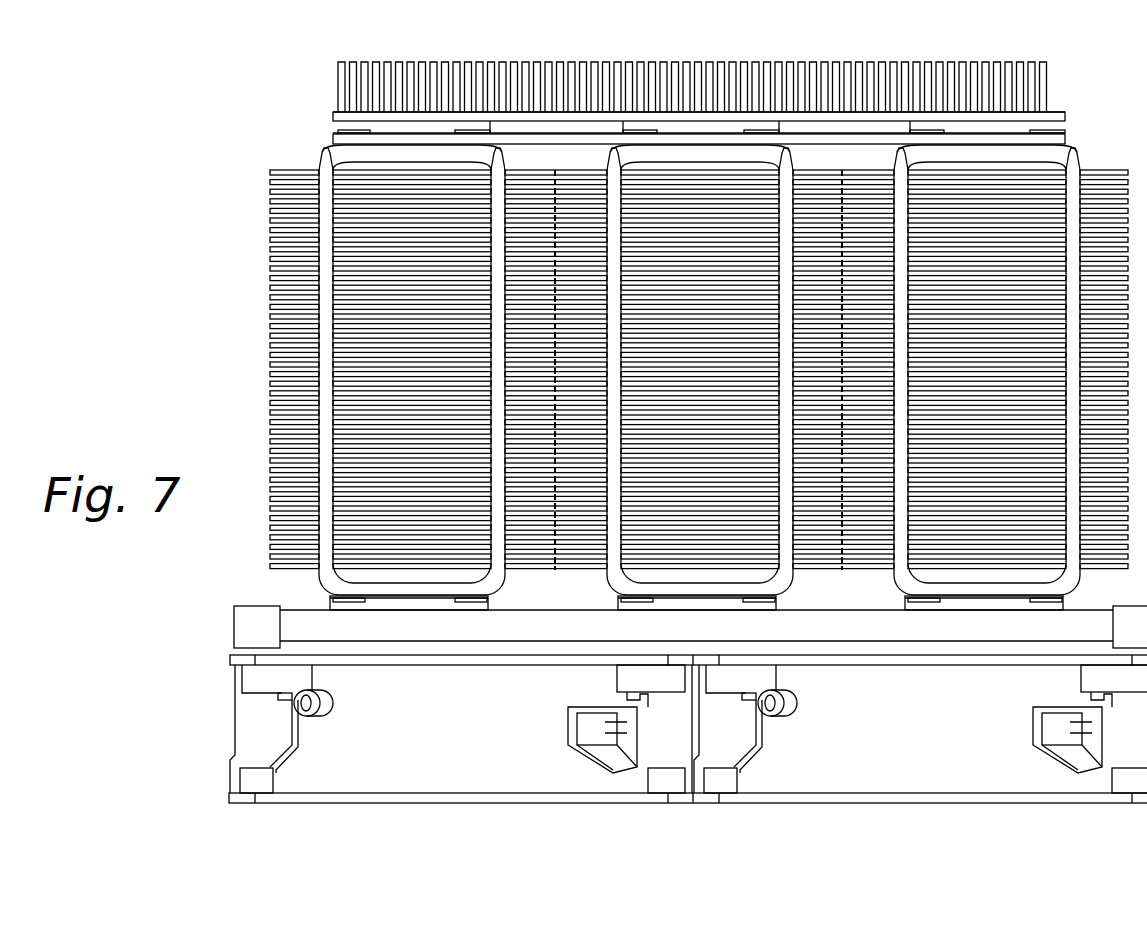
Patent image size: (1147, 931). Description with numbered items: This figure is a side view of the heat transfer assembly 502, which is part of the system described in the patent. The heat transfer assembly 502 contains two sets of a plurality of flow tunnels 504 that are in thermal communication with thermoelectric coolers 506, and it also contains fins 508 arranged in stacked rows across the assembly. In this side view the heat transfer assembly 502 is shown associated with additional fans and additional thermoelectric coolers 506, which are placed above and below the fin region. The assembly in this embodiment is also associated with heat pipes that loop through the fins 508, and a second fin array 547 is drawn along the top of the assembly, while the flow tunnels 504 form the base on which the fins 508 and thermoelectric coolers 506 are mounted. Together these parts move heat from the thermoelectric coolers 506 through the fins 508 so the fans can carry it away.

The heat transfer assembly 502 is at (170, 122).
The flow tunnels 504 is at (318, 622).
The thermoelectric coolers 506 is at (1064, 130).
The fins 508 is at (268, 239).
The upper fin array 547 is at (1048, 73).